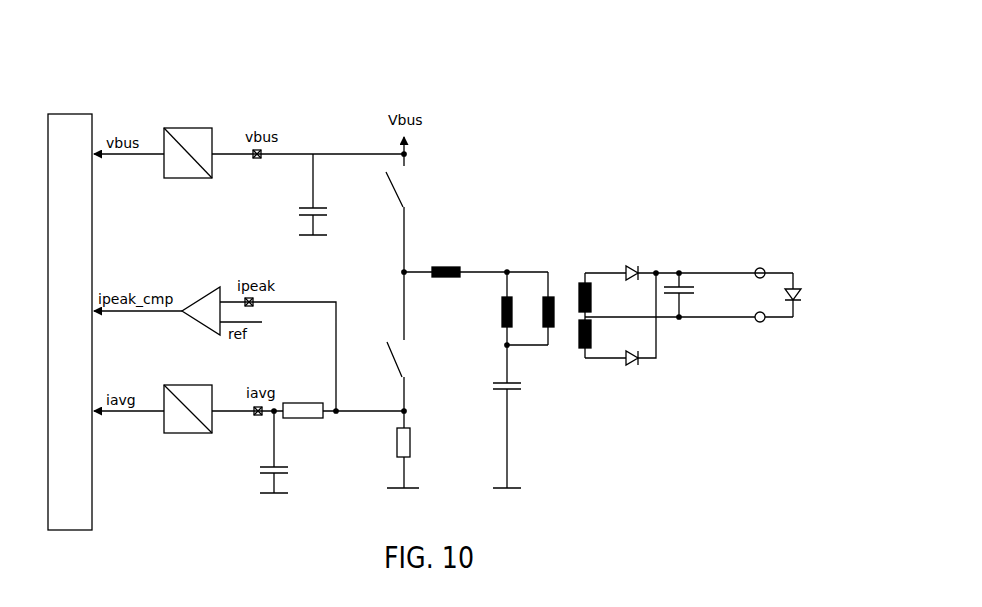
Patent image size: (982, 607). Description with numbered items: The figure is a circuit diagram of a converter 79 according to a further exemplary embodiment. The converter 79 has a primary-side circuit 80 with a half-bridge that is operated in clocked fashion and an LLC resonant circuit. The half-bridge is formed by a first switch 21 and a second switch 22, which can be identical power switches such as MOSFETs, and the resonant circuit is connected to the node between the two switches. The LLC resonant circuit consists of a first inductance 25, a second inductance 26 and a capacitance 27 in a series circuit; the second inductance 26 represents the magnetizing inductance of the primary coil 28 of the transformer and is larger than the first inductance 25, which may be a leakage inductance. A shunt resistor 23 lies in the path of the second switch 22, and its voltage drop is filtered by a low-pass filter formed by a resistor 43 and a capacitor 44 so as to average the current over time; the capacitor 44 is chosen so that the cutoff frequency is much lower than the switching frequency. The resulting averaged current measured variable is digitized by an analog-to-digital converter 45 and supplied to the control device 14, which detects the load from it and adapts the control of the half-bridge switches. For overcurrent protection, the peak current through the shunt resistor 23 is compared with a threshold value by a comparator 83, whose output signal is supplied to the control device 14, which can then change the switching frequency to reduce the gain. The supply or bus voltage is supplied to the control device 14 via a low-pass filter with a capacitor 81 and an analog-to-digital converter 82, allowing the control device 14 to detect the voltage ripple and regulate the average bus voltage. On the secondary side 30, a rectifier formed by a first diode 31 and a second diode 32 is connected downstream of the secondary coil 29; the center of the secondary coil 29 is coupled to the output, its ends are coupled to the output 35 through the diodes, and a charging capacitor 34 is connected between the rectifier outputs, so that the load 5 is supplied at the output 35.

The load 5 is at (801, 291).
The control device 14 is at (80, 334).
The first switch 21 is at (383, 188).
The second switch 22 is at (384, 351).
The shunt resistor 23 is at (397, 442).
The first inductance 25 is at (450, 266).
The second inductance 26 is at (500, 318).
The capacitance 27 is at (496, 381).
The primary coil 28 is at (557, 338).
The secondary coil 29 is at (581, 272).
The secondary side 30 is at (597, 160).
The first diode 31 is at (631, 266).
The second diode 32 is at (635, 366).
The charging capacitor 34 is at (696, 297).
The output 35 is at (762, 268).
The resistor 43 is at (313, 420).
The capacitor 44 is at (259, 465).
The analog-to-digital converter 45 is at (184, 434).
The converter 79 is at (100, 72).
The primary-side circuit 80 is at (167, 84).
The capacitor 81 is at (300, 207).
The analog-to-digital converter 82 is at (198, 128).
The comparator 83 is at (207, 288).